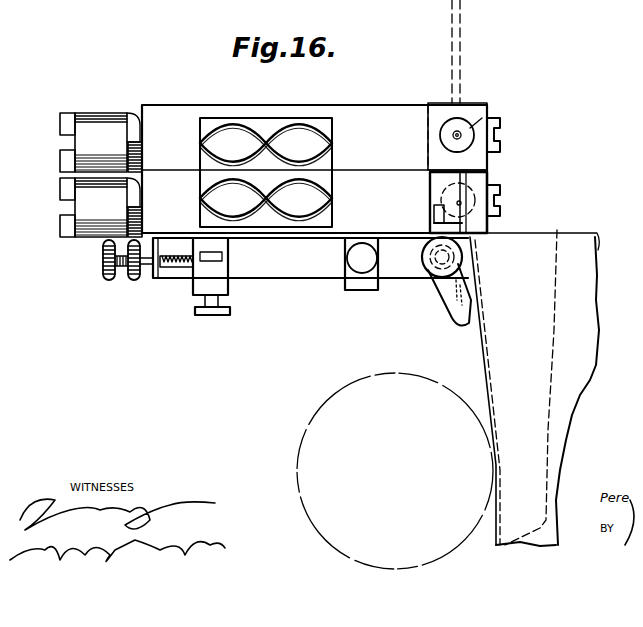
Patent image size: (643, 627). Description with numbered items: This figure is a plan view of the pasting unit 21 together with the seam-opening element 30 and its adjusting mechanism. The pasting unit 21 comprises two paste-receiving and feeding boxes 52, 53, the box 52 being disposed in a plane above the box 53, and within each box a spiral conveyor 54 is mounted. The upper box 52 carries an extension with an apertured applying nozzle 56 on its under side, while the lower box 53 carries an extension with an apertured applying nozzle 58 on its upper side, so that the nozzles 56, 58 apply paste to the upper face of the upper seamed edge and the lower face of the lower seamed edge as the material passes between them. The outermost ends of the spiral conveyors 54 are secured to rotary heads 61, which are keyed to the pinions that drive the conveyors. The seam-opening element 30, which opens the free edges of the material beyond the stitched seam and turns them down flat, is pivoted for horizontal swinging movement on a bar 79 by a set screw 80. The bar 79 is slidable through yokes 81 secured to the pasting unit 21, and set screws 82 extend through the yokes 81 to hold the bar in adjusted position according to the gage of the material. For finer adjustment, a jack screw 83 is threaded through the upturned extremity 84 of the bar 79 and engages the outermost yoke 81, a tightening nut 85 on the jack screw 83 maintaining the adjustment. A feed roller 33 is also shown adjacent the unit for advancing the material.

The pasting unit 21 is at (182, 112).
The seam-opening element 30 is at (455, 292).
The feed rollers 33 is at (438, 386).
The paste-receiving and feeding box 52 is at (376, 112).
The paste-receiving and feeding box 53 is at (285, 201).
The spiral conveyor 54 is at (286, 134).
The applying nozzle 56 is at (488, 116).
The applying nozzle 58 is at (472, 208).
The rotary heads 61 is at (82, 198).
The bar 79 is at (406, 271).
The set screw 80 is at (462, 257).
The yokes 81 is at (198, 290).
The set screws 82 is at (203, 315).
The jack screw 83 is at (176, 268).
The upturned extremity 84 is at (147, 272).
The tightening nut 85 is at (130, 268).